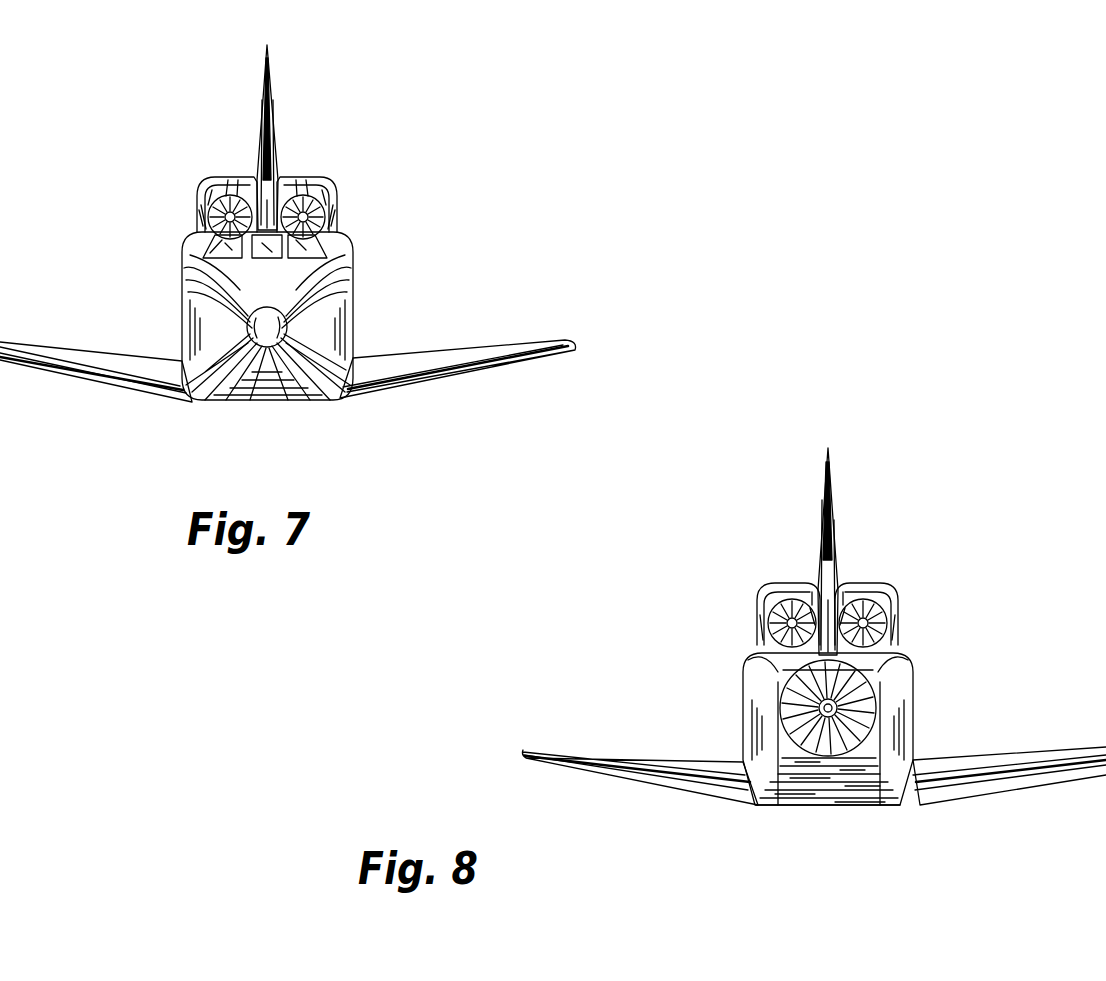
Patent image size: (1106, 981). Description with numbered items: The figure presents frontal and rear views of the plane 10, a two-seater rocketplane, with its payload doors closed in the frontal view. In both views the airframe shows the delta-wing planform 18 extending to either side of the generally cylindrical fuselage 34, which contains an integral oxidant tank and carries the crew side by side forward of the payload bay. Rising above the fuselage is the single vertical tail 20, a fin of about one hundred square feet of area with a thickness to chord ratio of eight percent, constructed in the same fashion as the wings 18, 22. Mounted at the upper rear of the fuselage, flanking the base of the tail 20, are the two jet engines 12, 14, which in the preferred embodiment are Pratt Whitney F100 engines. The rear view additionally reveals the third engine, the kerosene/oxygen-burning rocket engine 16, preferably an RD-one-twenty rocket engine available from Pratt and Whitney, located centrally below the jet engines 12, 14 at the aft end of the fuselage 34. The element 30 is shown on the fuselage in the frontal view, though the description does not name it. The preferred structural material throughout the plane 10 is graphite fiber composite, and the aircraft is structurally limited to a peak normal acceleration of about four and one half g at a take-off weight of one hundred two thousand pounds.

In FIG. 7, the plane 10 is at (368, 175).
In FIG. 8, the plane 10 is at (933, 535).
In FIG. 7, the jet engine 12 is at (205, 214).
In FIG. 8, the jet engine 12 is at (892, 620).
In FIG. 7, the jet engine 14 is at (338, 215).
In FIG. 8, the jet engine 14 is at (758, 620).
In FIG. 8, the rocket engine 16 is at (822, 709).
In FIG. 7, the delta-wing planform 18 is at (128, 367).
In FIG. 8, the delta-wing planform 18 is at (947, 770).
In FIG. 7, the vertical tail 20 is at (265, 117).
In FIG. 8, the vertical tail 20 is at (832, 488).
In FIG. 7, the wing 22 is at (447, 375).
In FIG. 8, the wing 22 is at (683, 760).
In FIG. 7, the fuselage 30 is at (355, 287).
In FIG. 8, the fuselage 34 is at (860, 787).